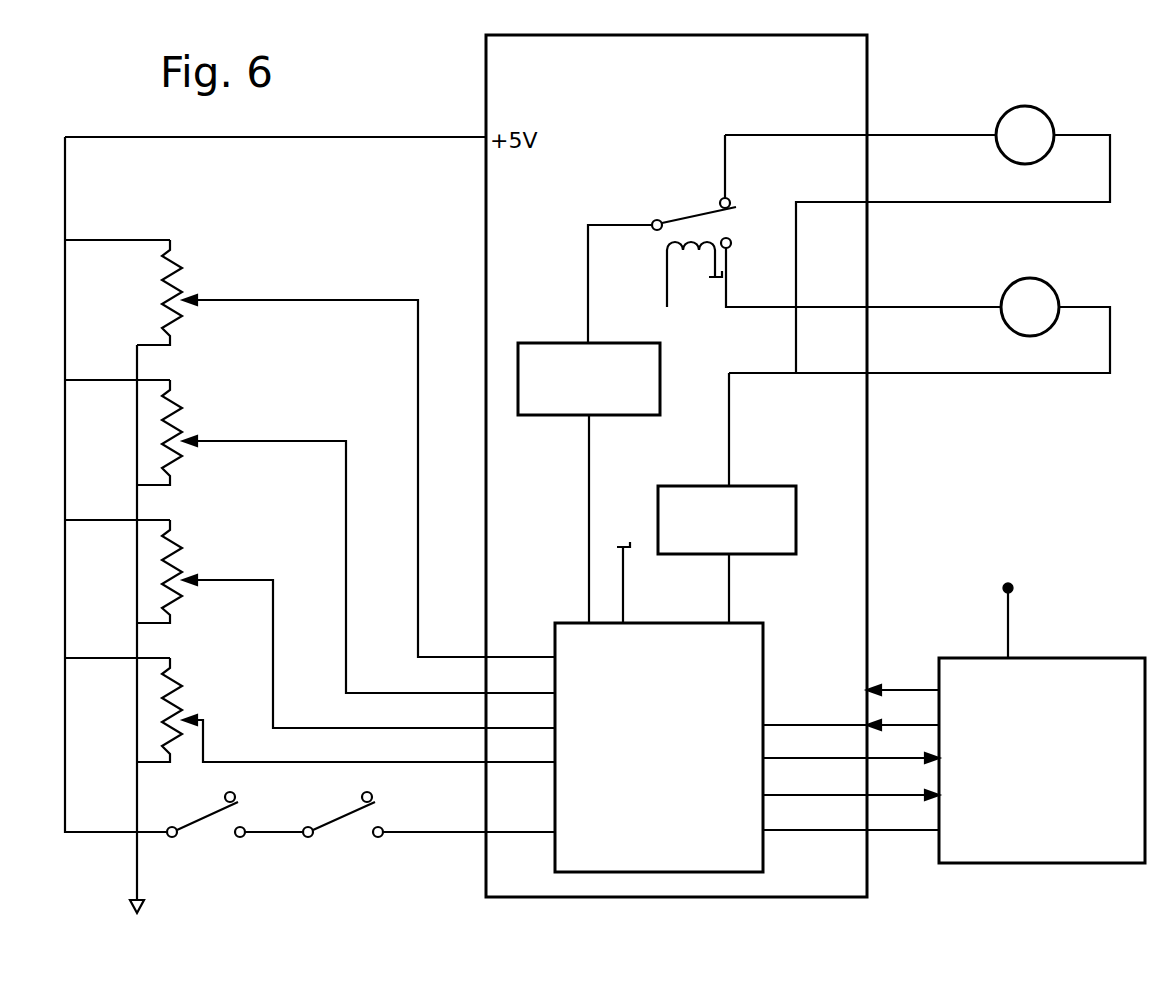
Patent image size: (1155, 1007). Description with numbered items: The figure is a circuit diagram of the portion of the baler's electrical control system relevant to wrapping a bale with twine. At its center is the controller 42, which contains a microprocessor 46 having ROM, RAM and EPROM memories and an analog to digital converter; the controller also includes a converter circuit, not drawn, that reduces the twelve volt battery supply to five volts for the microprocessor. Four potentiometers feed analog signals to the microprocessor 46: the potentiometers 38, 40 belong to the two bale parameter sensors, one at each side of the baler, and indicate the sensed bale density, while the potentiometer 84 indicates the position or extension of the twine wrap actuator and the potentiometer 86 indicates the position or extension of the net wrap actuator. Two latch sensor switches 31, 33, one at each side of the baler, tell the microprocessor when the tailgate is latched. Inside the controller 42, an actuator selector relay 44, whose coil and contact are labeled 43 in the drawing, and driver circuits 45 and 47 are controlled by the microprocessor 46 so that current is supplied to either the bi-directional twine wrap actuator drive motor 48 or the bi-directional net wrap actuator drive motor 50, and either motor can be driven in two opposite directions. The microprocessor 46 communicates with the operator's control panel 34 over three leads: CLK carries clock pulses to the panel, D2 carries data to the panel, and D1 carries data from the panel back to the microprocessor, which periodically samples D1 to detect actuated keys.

The latch sensor switch 31 is at (203, 841).
The latch sensor switch 33 is at (350, 843).
The control panel 34 is at (1061, 657).
The potentiometer 38 is at (190, 260).
The potentiometer 40 is at (192, 409).
The controller 42 is at (873, 98).
The relay coil and contact 43 is at (667, 288).
The actuator selector relay 44 is at (697, 192).
The driver circuit 45 is at (559, 343).
The microprocessor 46 is at (747, 622).
The driver circuit 47 is at (761, 486).
The twine wrap actuator drive motor 48 is at (1043, 279).
The net wrap actuator drive motor 50 is at (1038, 104).
The potentiometer 84 is at (187, 547).
The potentiometer 86 is at (187, 695).